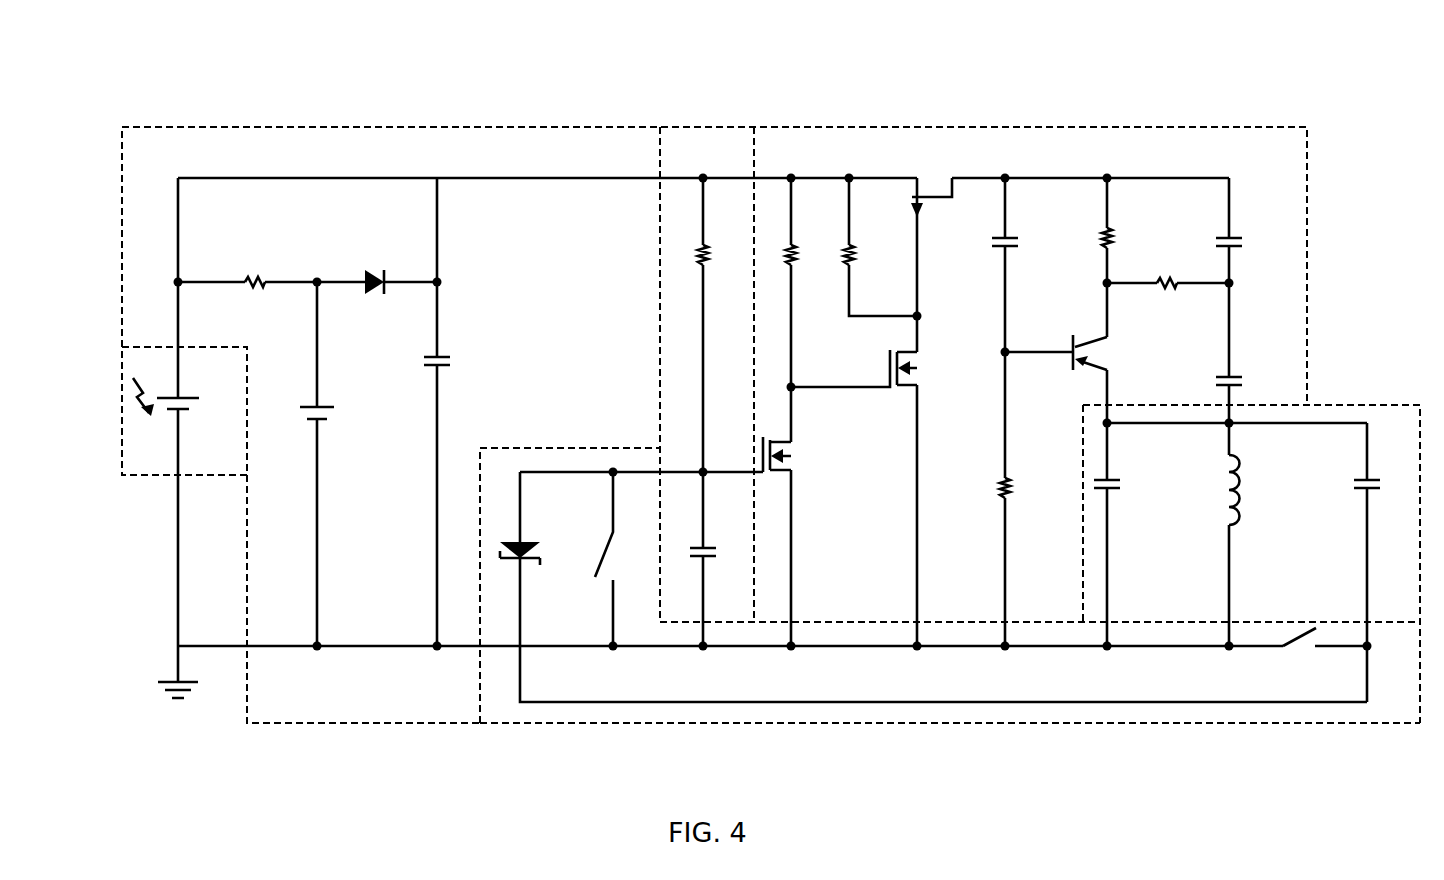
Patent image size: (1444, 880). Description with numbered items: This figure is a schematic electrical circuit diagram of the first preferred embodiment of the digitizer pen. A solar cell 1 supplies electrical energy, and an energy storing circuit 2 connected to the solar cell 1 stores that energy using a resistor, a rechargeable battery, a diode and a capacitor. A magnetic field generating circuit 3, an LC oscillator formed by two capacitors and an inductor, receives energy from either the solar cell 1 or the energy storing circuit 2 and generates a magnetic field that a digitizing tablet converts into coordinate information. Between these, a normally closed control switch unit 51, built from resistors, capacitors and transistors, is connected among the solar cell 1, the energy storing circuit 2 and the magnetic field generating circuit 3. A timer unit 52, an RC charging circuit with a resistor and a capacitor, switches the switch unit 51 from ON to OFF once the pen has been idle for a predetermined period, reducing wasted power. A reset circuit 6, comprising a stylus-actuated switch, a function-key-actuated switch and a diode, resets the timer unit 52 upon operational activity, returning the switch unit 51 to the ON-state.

The solar cell 1 is at (121, 427).
The energy storing circuit 2 is at (430, 127).
The magnetic field generating circuit 3 is at (1375, 405).
The reset circuit 6 is at (930, 725).
The control switch unit 51 is at (1130, 127).
The timer unit 52 is at (707, 127).